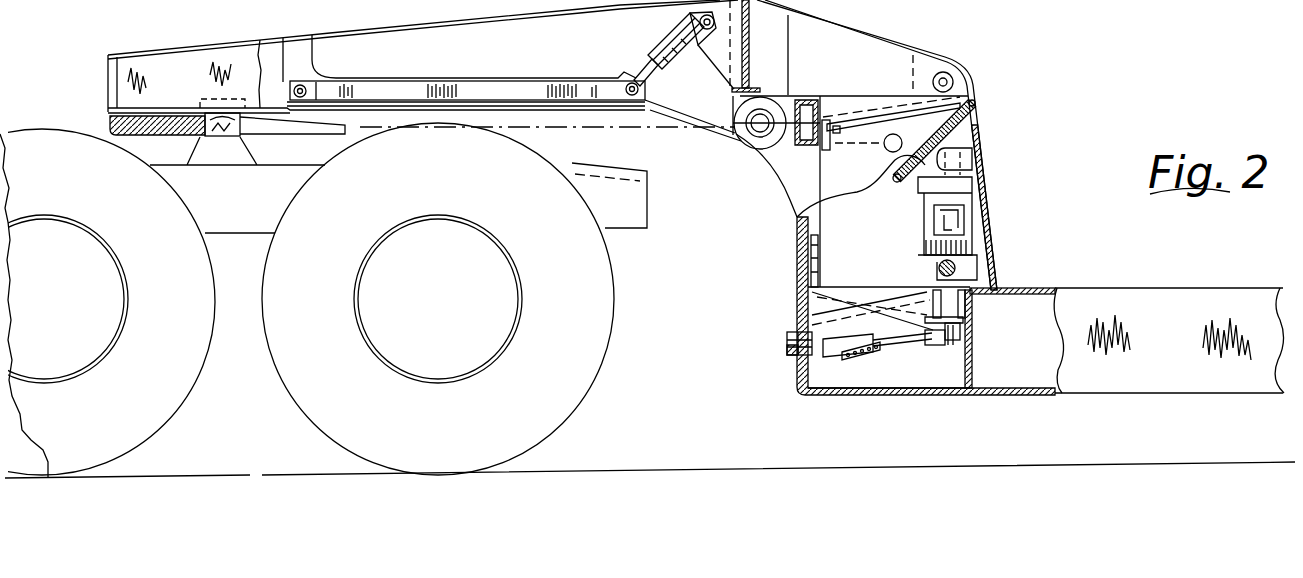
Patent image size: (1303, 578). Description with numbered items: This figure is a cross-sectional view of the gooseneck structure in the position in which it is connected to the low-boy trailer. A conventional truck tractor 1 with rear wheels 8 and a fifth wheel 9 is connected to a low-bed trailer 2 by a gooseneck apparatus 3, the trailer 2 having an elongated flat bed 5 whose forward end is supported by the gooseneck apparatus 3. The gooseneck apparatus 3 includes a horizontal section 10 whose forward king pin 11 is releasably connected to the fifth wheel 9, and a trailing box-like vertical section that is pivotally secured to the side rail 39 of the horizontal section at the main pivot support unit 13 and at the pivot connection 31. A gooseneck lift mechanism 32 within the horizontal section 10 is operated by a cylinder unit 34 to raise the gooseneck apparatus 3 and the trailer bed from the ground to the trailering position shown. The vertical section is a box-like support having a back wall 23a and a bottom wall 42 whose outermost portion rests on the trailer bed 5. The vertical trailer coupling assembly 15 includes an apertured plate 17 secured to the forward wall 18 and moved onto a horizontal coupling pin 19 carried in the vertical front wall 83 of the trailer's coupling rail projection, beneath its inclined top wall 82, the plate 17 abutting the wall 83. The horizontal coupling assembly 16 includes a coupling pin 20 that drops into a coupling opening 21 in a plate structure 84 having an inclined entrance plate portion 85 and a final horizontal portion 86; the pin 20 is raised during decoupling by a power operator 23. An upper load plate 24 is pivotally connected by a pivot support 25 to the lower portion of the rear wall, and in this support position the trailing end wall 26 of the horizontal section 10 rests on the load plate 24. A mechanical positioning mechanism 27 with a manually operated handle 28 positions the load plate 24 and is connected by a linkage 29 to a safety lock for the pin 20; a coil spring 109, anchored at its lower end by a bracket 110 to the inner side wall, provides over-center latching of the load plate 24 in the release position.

The truck tractor 1 is at (367, 300).
The low-bed trailer 2 is at (1169, 319).
The gooseneck apparatus 3 is at (717, 268).
The flat bed 5 is at (1178, 357).
The rear wheels 8 is at (196, 205).
The fifth wheel 9 is at (156, 141).
The horizontal section 10 is at (166, 46).
The king pin 11 is at (218, 137).
The main pivot support unit 13 is at (738, 142).
The vertical trailer coupling assembly 15 is at (900, 320).
The horizontal coupling assembly 16 is at (954, 345).
The apertured plate 17 is at (806, 378).
The forward wall 18 is at (793, 334).
The horizontal coupling pin 19 is at (788, 347).
The coupling pin 20 is at (958, 336).
The coupling opening 21 is at (968, 338).
The power operator 23 is at (988, 200).
The back wall 23a is at (988, 222).
The load plate 24 is at (978, 120).
The pivot support 25 is at (978, 143).
The trailing end wall 26 is at (976, 80).
The mechanical positioning mechanism 27 is at (890, 110).
The handle 28 is at (878, 152).
The linkage 29 is at (938, 265).
The pivot connection 31 is at (953, 70).
The gooseneck lift mechanism 32 is at (627, 74).
The cylinder unit 34 is at (678, 46).
The side rail 39 is at (374, 26).
The bottom wall 42 is at (858, 287).
The inclined top wall 82 is at (823, 318).
The vertical front wall 83 is at (810, 395).
The plate structure 84 is at (898, 348).
The inclined entrance plate portion 85 is at (878, 353).
The horizontal portion 86 is at (930, 341).
The coil spring 109 is at (866, 191).
The bracket 110 is at (906, 183).